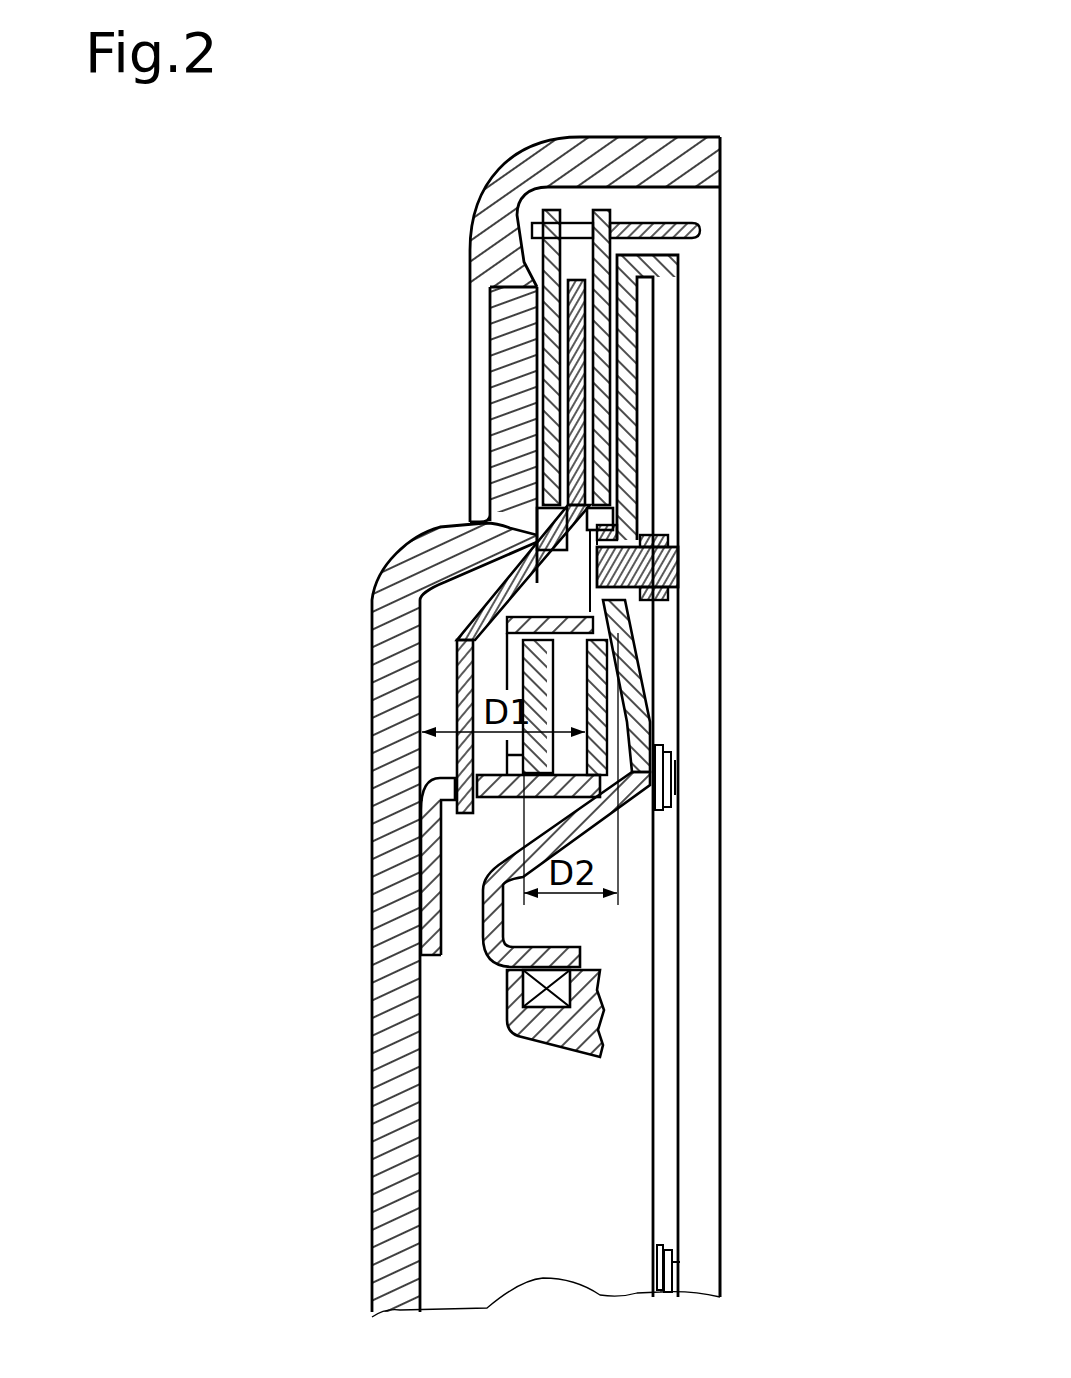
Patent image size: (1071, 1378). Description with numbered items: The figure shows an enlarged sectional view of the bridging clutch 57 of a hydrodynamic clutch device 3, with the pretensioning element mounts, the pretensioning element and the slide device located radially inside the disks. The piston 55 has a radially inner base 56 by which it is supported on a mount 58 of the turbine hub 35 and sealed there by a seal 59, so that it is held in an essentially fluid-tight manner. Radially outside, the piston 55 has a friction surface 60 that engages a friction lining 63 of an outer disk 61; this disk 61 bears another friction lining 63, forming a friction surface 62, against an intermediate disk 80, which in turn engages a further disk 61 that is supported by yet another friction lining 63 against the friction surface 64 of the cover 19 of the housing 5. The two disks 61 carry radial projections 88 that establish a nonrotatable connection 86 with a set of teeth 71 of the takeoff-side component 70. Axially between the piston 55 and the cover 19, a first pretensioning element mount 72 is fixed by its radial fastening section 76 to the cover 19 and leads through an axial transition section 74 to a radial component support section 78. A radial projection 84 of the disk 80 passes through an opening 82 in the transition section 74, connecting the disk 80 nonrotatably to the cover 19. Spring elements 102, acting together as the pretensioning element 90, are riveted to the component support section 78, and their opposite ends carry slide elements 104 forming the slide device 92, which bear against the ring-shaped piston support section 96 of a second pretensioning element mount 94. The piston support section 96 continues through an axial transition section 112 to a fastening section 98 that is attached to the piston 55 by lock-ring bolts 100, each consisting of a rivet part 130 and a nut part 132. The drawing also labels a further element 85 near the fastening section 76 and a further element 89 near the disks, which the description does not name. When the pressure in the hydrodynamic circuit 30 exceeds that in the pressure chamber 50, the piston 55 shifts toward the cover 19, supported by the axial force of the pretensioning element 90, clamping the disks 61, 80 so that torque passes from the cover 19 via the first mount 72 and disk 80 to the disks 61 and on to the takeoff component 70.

The hydrodynamic clutch device 3 is at (712, 200).
The housing 5 is at (667, 137).
The cover 19 is at (397, 1075).
The hydrodynamic circuit 30 is at (710, 285).
The turbine hub 35 is at (580, 1023).
The pressure chamber 50 is at (420, 922).
The piston 55 is at (645, 708).
The base 56 is at (595, 955).
The bridging clutch 57 is at (574, 262).
The mount 58 is at (605, 972).
The seal 59 is at (548, 1000).
The friction surface 60 is at (640, 380).
The disk 61 is at (685, 215).
The friction surface 62 is at (548, 318).
The friction lining 63 is at (490, 345).
The friction surface 64 is at (490, 408).
The takeoff-side component 70 is at (722, 137).
The set of teeth 71 is at (702, 233).
The first pretensioning element mount 72 is at (430, 792).
The transition section 74 is at (512, 800).
The fastening section 76 is at (432, 850).
The component support section 78 is at (648, 690).
The intermediate disk 80 is at (410, 573).
The opening 82 is at (430, 792).
The radial projection 84 is at (433, 805).
The wall portion 85 is at (440, 890).
The nonrotatable connection 86 is at (622, 222).
The radial projections 88 is at (545, 212).
The pin 89 is at (545, 258).
The pretensioning element 90 is at (660, 748).
The slide device 92 is at (662, 775).
The second pretensioning element mount 94 is at (465, 640).
The piston support section 96 is at (457, 680).
The fastening section 98 is at (620, 535).
The lock-ring bolts 100 is at (680, 568).
The spring elements 102 is at (645, 697).
The slide elements 104 is at (655, 655).
The transition section 112 is at (560, 583).
The rivet part 130 is at (515, 547).
The nut part 132 is at (650, 535).